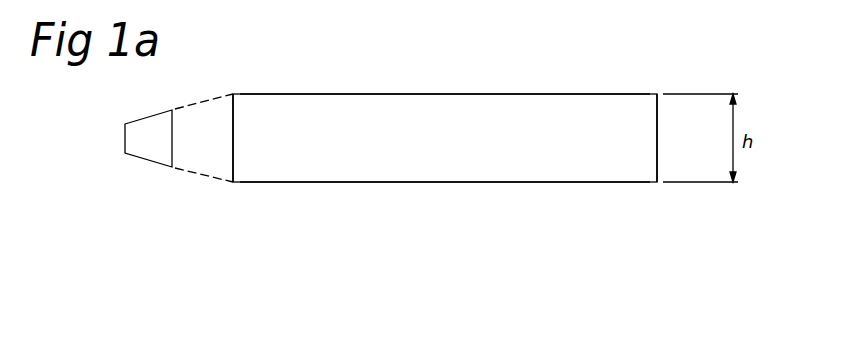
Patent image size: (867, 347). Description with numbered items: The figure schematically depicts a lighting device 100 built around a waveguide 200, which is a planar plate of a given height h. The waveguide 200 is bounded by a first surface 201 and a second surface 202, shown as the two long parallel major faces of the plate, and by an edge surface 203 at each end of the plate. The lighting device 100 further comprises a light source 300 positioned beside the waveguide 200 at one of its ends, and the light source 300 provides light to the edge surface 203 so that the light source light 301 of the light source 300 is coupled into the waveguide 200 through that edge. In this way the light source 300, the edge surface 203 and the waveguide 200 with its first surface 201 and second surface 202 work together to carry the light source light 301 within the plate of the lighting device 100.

The writing instrument 100 is at (394, 146).
The waveguide 200 is at (461, 124).
The first surface 201 is at (418, 182).
The second surface 202 is at (418, 94).
The edge surface 203 is at (233, 122).
The light source 300 is at (145, 175).
The light source light 301 is at (188, 172).